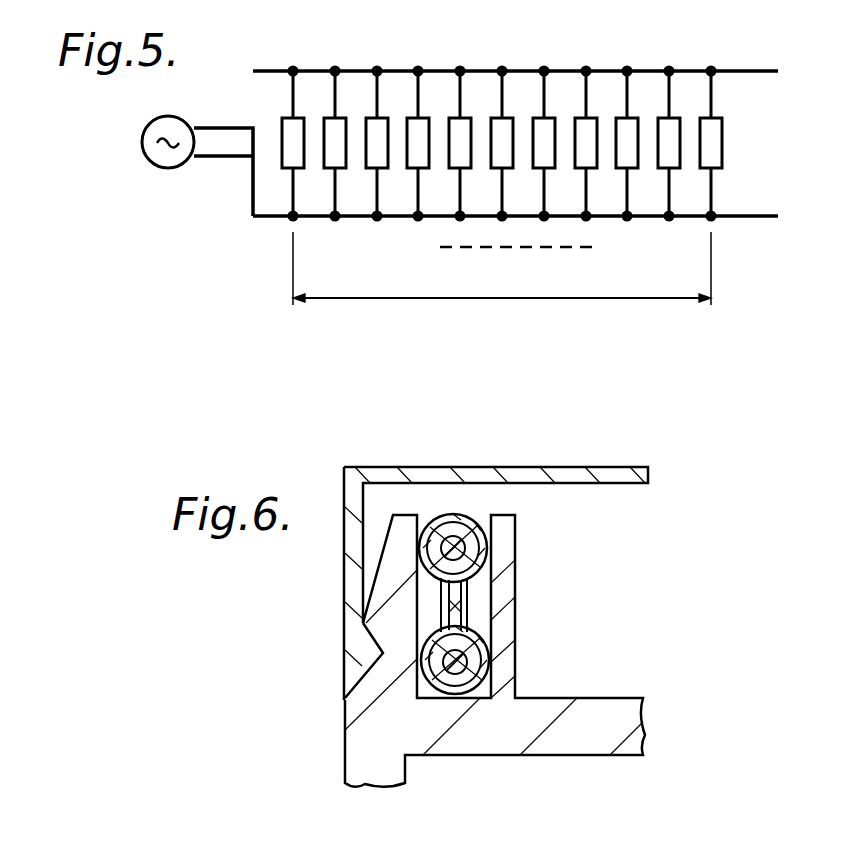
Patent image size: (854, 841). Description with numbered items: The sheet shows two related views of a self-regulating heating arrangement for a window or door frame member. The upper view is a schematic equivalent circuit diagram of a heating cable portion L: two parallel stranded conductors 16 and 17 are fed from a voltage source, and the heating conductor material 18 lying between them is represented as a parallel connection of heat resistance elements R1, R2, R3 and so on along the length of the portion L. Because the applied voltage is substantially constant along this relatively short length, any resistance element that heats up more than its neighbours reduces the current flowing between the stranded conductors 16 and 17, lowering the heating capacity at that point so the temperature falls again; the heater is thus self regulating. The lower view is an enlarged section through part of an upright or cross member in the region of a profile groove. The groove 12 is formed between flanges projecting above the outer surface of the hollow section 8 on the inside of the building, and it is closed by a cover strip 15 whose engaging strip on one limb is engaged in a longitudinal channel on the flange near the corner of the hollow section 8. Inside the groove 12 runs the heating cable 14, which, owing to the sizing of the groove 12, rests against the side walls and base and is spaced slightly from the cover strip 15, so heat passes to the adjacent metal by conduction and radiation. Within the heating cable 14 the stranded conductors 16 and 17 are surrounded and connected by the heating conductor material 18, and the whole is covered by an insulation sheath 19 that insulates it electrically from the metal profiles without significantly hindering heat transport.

In FIG. 5, the heat resistance element R1 is at (300, 160).
In FIG. 5, the heat resistance element R2 is at (342, 160).
In FIG. 5, the heat resistance element R3 is at (384, 160).
In FIG. 5, the heating cable portion L is at (502, 268).
In FIG. 6, the hollow section 8 is at (615, 733).
In FIG. 6, the groove 12 is at (439, 564).
In FIG. 6, the heating cable 14 is at (487, 557).
In FIG. 6, the cover strip 15 is at (389, 477).
In FIG. 6, the stranded conductor 16 is at (453, 538).
In FIG. 6, the stranded conductor 17 is at (440, 664).
In FIG. 6, the heating conductor material 18 is at (470, 632).
In FIG. 6, the insulation sheath 19 is at (462, 620).